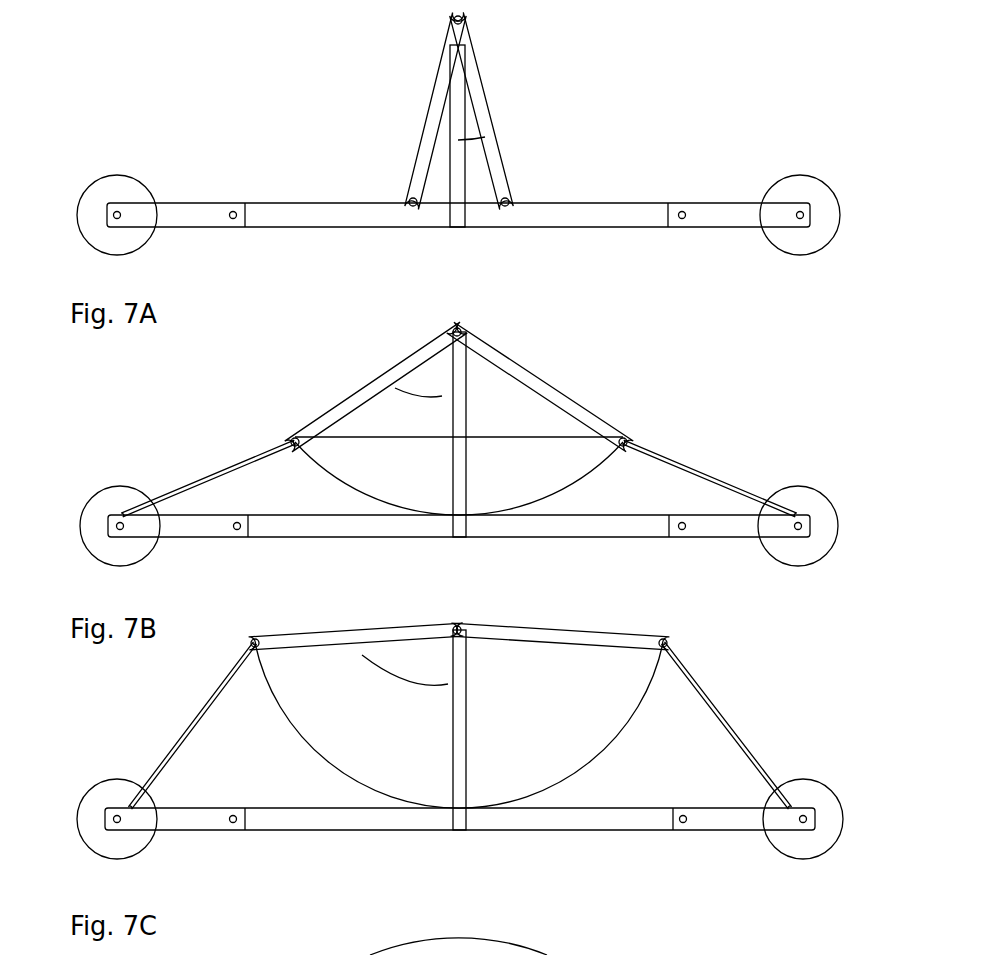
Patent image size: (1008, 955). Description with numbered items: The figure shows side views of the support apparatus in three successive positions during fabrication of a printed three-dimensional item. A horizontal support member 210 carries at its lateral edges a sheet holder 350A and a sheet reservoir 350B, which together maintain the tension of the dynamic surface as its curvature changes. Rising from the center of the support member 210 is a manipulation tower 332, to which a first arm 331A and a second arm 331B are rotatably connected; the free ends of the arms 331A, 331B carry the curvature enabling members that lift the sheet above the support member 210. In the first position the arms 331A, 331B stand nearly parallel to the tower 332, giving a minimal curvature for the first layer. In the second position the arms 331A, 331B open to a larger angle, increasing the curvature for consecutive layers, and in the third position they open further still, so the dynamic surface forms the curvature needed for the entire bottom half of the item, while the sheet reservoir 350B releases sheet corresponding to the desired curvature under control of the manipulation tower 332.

In FIG. 7A, the base frame bar 210 is at (332, 197).
In FIG. 7B, the base frame bar 210 is at (290, 512).
In FIG. 7C, the base frame bar 210 is at (290, 813).
In FIG. 7A, the arm 331A is at (420, 120).
In FIG. 7B, the arm 331A is at (332, 397).
In FIG. 7C, the arm 331A is at (305, 638).
In FIG. 7A, the arm 331B is at (490, 125).
In FIG. 7B, the arm 331B is at (492, 352).
In FIG. 7C, the arm 331B is at (493, 637).
In FIG. 7A, the central support post 332 is at (462, 175).
In FIG. 7B, the central support post 332 is at (465, 403).
In FIG. 7C, the central support post 332 is at (467, 687).
In FIG. 7A, the sheet holder 350A is at (108, 182).
In FIG. 7B, the sheet holder 350A is at (108, 490).
In FIG. 7C, the sheet holder 350A is at (108, 788).
In FIG. 7A, the sheet reservoir 350B is at (822, 177).
In FIG. 7B, the sheet reservoir 350B is at (820, 485).
In FIG. 7C, the sheet reservoir 350B is at (822, 788).